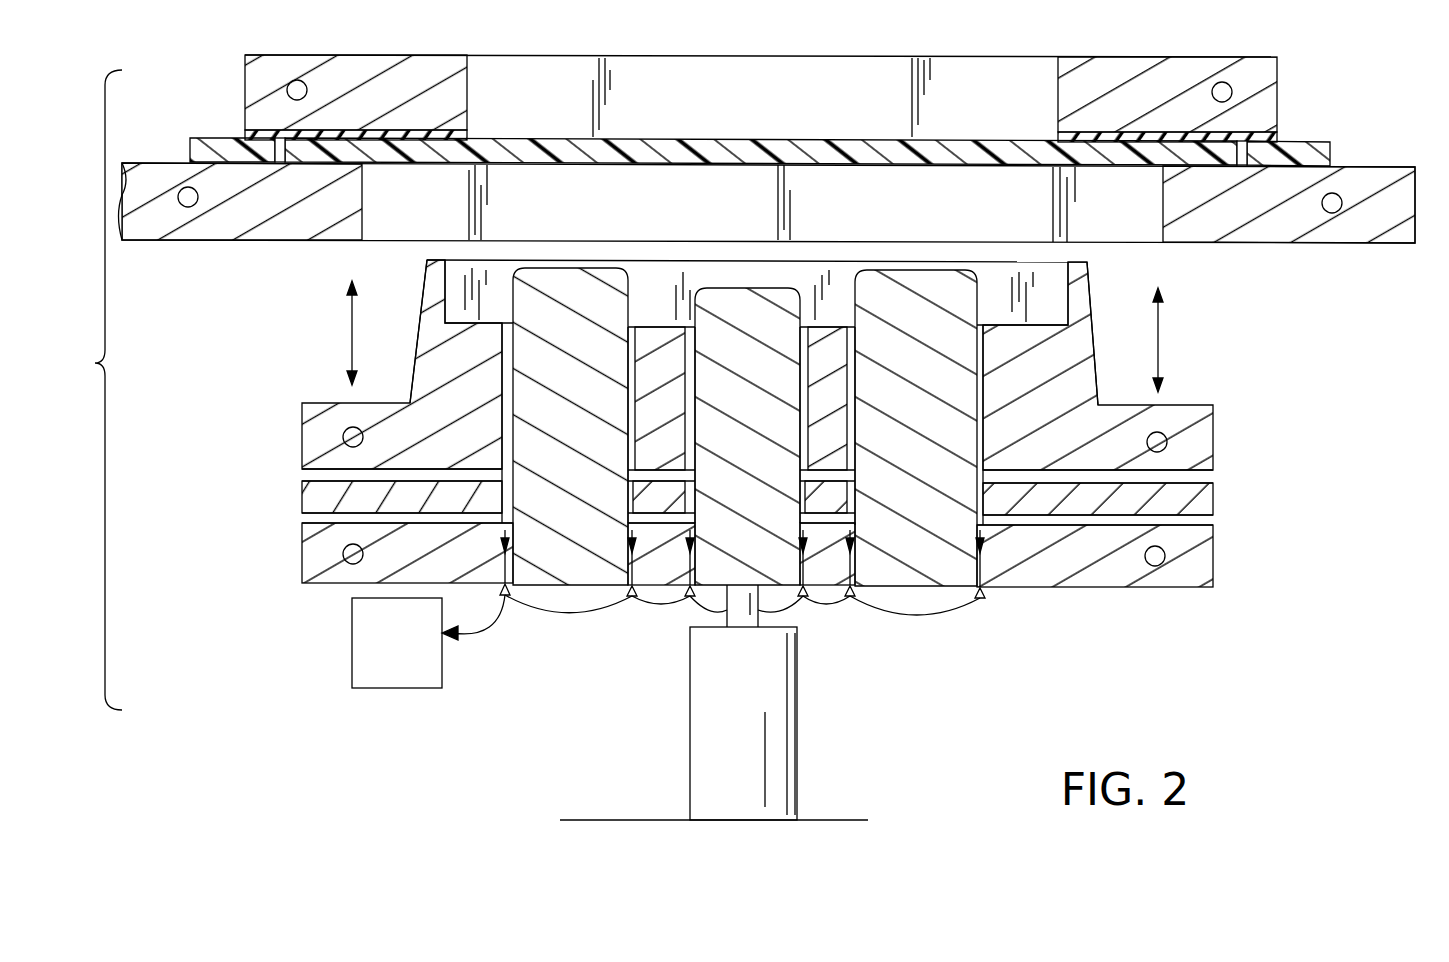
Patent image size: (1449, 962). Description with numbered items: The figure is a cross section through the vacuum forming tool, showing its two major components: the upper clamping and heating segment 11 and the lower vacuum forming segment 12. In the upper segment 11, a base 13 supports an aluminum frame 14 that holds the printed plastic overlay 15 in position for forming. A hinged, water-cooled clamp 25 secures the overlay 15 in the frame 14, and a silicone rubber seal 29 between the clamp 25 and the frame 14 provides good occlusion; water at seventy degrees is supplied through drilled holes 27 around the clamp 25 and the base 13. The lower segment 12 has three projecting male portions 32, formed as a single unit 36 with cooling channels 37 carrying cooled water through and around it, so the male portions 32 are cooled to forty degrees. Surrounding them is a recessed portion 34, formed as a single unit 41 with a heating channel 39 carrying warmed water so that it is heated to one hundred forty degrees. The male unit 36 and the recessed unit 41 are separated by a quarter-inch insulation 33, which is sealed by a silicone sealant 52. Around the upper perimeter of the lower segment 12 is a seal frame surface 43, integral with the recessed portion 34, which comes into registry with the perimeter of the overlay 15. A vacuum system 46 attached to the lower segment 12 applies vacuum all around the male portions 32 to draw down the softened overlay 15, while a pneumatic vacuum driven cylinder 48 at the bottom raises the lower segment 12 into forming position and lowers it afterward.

The upper clamping and heating segment 11 is at (1403, 300).
The lower vacuum forming segment 12 is at (1222, 466).
The base 13 is at (210, 227).
The frame 14 is at (190, 138).
The overlay 15 is at (855, 150).
The clamp 25 is at (1118, 50).
The drilled holes 27 is at (1222, 81).
The silicone rubber seal 29 is at (246, 133).
The projecting male portions 32 is at (560, 292).
The insulation 33 is at (307, 493).
The recessed portion 34 is at (415, 417).
The single unit 36 is at (332, 575).
The cooling channels 37 is at (343, 553).
The heating channel 39 is at (343, 438).
The single unit 41 is at (437, 337).
The seal frame surface 43 is at (430, 266).
The vacuum system 46 is at (550, 610).
The pneumatic vacuum driven cylinder 48 is at (775, 722).
The silicone sealant 52 is at (303, 477).